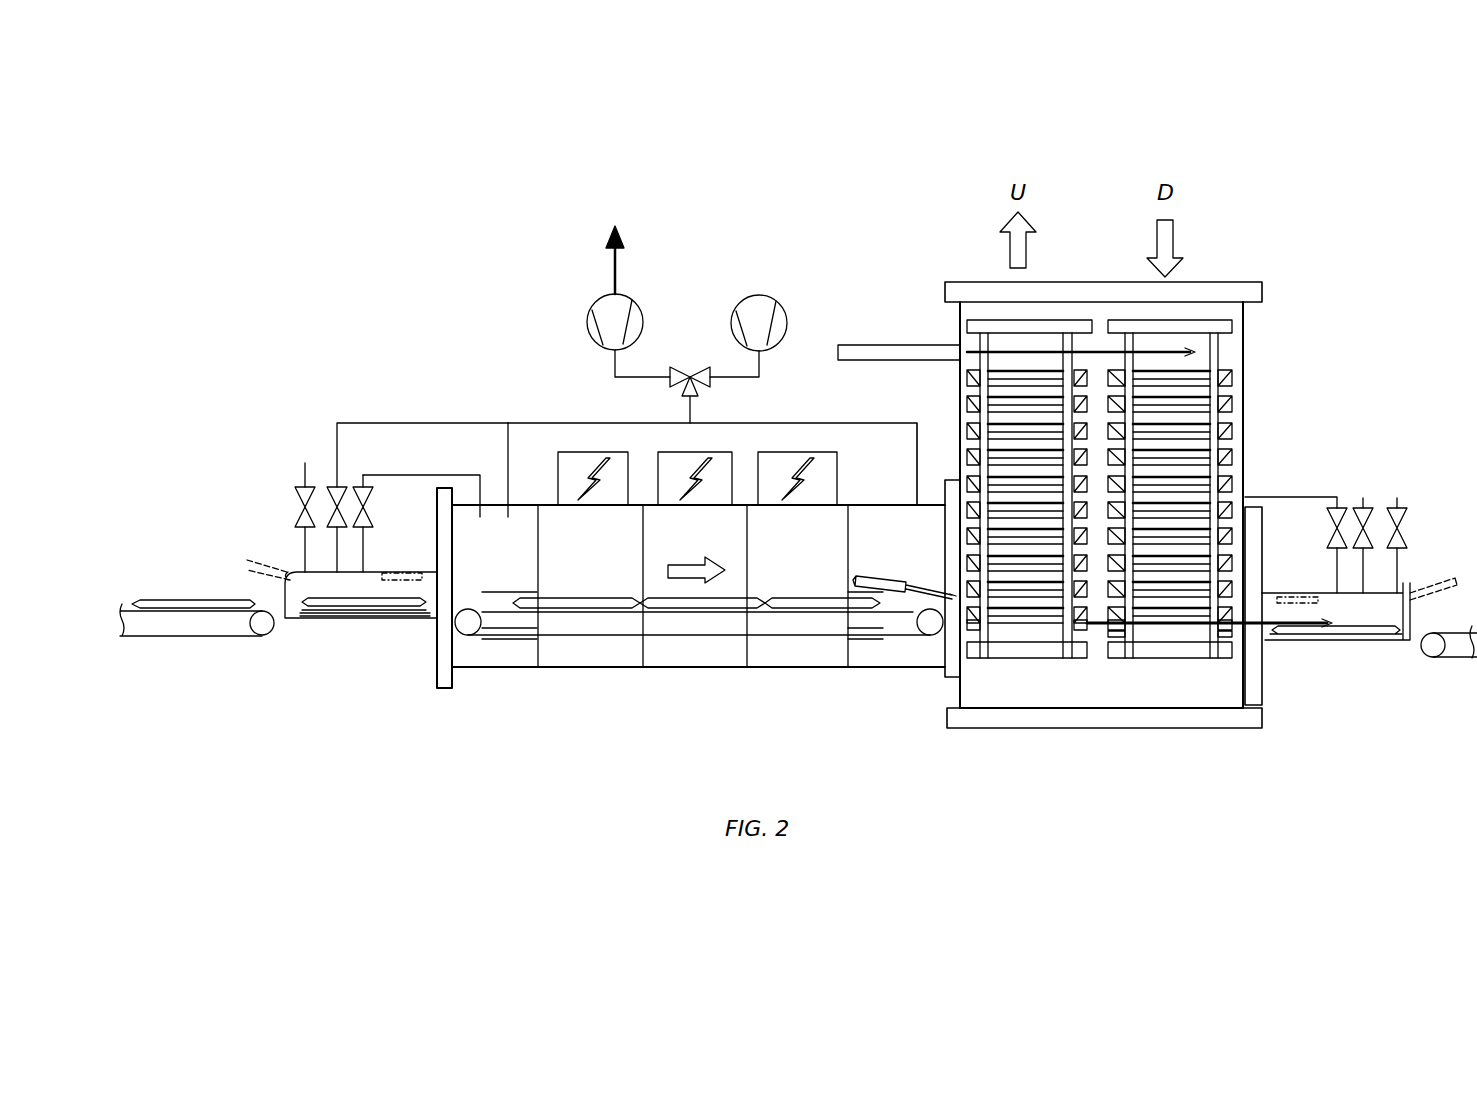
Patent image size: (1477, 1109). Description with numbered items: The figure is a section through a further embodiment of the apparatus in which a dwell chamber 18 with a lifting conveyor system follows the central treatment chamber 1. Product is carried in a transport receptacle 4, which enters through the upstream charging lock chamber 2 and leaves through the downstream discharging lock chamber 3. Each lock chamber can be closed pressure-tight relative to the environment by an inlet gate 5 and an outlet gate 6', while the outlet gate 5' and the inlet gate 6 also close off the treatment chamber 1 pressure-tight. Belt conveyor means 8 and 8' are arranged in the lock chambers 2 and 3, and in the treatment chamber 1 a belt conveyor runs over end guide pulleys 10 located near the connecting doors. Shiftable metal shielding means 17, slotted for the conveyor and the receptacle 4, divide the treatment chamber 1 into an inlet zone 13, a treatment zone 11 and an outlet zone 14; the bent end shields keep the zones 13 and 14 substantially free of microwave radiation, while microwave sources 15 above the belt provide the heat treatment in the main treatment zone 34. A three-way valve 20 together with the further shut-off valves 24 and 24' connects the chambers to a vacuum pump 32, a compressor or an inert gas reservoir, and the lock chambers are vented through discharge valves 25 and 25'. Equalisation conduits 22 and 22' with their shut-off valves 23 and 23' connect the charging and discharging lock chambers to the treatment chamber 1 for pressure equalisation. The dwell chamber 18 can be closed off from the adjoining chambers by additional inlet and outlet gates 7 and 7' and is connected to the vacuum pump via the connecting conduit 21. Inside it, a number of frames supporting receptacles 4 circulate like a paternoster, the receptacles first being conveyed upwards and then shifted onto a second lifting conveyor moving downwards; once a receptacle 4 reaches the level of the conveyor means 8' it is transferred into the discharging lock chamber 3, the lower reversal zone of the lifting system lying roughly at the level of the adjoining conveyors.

The treatment chamber 1 is at (702, 675).
The charging lock chamber 2 is at (310, 640).
The discharging lock chamber 3 is at (1377, 660).
The transport receptacle 4 is at (343, 603).
The inlet gate 5 is at (268, 540).
The outlet gate 5' is at (406, 541).
The inlet gate 6 is at (1293, 565).
The outlet gate 6' is at (1433, 563).
The inlet gate 7 is at (780, 571).
The outlet gate 7' is at (1275, 627).
The conveyor means 8 is at (365, 654).
The conveyor means 8' is at (1222, 668).
The end guide pulleys 10 is at (470, 618).
The treatment zone 11 is at (565, 547).
The inlet zone 13 is at (507, 560).
The outlet zone 14 is at (888, 542).
The microwave sources 15 is at (587, 452).
The shielding means 17 is at (522, 647).
The dwell chamber 18 is at (1080, 733).
The three-way valve 20 is at (690, 370).
The connecting conduit 21 is at (805, 417).
The equalisation conduit 22 is at (421, 475).
The shut-off valve 23 is at (362, 502).
The shut-off valve 24 is at (404, 484).
The discharge valve 25 is at (288, 496).
The equalisation conduit 22' is at (1291, 469).
The shut-off valve 23' is at (1346, 510).
The shut-off valve 24' is at (1380, 522).
The discharge valve 25' is at (1424, 525).
The vacuum pump 32 is at (628, 288).
The main treatment zone 34 is at (773, 263).